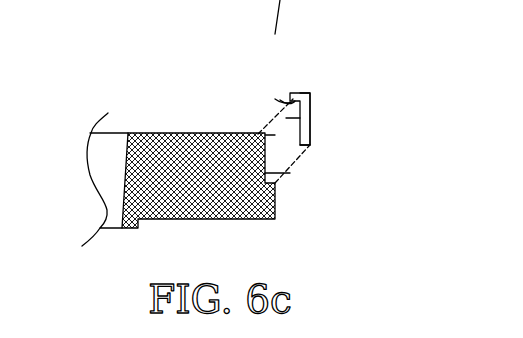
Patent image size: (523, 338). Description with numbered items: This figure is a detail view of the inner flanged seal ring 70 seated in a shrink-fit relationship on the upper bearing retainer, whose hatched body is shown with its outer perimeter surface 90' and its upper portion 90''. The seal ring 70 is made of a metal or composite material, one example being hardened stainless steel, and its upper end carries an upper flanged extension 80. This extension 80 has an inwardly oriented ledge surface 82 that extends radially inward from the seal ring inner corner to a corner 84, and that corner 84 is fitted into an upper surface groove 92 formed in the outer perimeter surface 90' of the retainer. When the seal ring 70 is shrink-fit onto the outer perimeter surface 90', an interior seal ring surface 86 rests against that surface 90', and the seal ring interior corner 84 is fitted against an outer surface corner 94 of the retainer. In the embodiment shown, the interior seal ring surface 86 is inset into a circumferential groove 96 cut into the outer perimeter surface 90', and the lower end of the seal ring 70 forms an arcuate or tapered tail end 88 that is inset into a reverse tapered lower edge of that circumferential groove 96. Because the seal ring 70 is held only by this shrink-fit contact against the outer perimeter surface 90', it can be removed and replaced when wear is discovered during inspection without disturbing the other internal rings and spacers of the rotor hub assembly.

The inner flanged seal ring 70 is at (310, 106).
The upper flanged extension 80 is at (300, 93).
The ledge surface 82 is at (286, 102).
The corner 84 is at (278, 100).
The interior seal ring surface 86 is at (298, 118).
The tail end 88 is at (308, 146).
The outer perimeter surface 90' is at (251, 208).
The seal body upper portion 90'' is at (90, 153).
The upper surface groove 92 is at (262, 133).
The outer surface corner 94 is at (275, 135).
The circumferential groove 96 is at (290, 173).